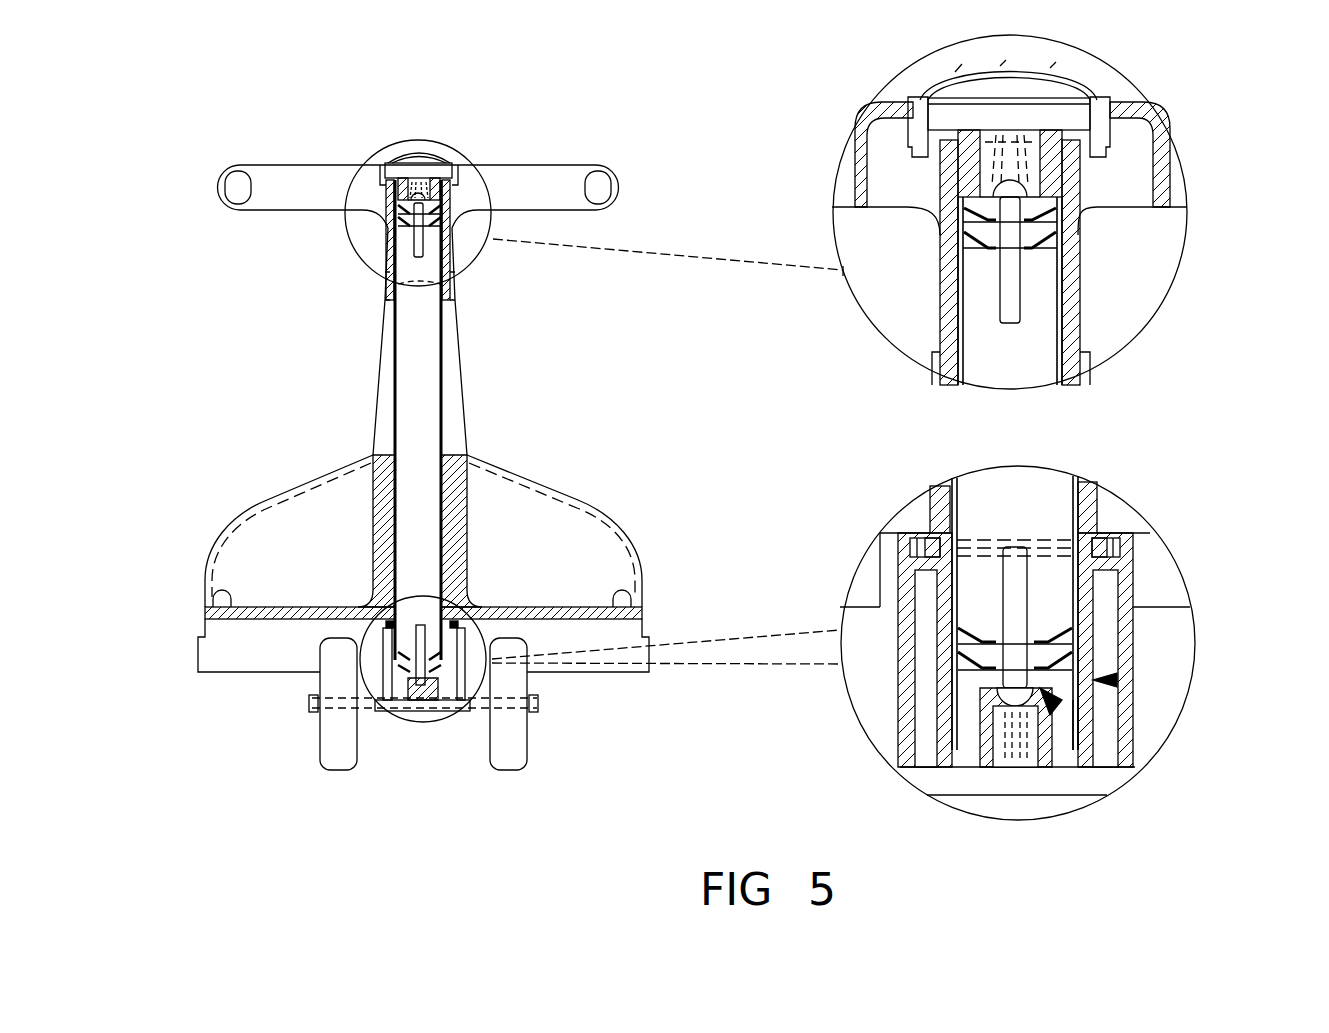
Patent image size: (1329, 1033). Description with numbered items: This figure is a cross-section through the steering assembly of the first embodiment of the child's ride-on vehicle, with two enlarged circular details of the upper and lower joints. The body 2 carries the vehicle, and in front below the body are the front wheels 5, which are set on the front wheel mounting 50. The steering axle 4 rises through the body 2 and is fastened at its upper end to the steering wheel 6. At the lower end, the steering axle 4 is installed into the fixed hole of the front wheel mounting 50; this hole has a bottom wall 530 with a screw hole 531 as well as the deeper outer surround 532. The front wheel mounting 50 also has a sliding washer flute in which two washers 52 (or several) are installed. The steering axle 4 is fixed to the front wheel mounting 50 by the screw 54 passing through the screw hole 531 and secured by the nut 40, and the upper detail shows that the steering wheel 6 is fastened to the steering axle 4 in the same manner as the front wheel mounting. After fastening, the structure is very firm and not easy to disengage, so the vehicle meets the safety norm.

The body 2 is at (550, 508).
The steering axle 4 is at (395, 385).
The front wheels 5 is at (500, 740).
The steering wheel 6 is at (558, 170).
The nut 40 is at (1060, 632).
The front wheel mounting 50 is at (1127, 713).
The washer 52 is at (1080, 552).
The screw 54 is at (1013, 583).
The bottom wall 530 is at (980, 675).
The screw hole 531 is at (1078, 733).
The deeper outer surround 532 is at (1117, 680).